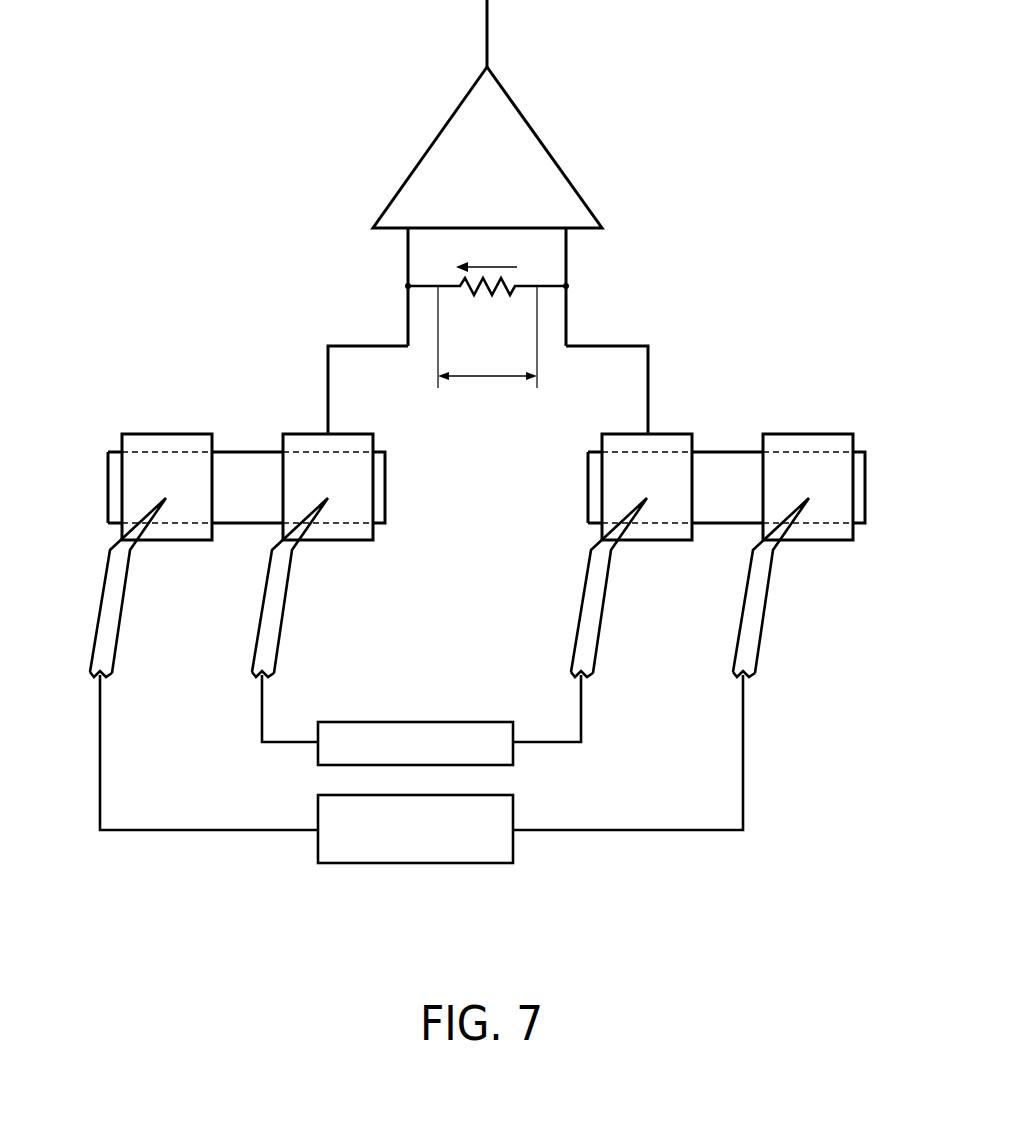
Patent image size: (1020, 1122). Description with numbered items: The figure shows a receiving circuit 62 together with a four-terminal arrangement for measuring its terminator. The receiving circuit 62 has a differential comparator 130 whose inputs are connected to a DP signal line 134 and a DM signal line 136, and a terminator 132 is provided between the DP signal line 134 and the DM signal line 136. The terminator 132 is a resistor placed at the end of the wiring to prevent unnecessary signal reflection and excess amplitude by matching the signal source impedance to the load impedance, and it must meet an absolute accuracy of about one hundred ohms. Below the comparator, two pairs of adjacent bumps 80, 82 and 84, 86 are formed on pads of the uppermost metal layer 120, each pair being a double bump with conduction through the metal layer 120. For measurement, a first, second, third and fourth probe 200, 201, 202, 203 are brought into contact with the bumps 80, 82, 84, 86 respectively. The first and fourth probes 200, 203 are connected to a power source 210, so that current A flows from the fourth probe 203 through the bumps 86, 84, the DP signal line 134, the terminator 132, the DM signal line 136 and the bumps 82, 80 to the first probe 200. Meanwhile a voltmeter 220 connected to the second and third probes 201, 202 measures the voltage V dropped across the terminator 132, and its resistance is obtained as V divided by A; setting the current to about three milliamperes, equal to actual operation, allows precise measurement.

The first receiving circuit 62 is at (598, 108).
The differential comparator 130 is at (523, 112).
The terminator 132 is at (500, 297).
The DP signal line 134 is at (568, 262).
The DM signal line 136 is at (406, 262).
The bump 80 is at (193, 434).
The bump 82 is at (352, 434).
The bump 84 is at (675, 434).
The bump 86 is at (837, 434).
The metal layer 120 is at (250, 452).
The first probe 200 is at (113, 635).
The second probe 201 is at (275, 635).
The third probe 202 is at (594, 635).
The fourth probe 203 is at (756, 635).
The power source 210 is at (497, 779).
The voltmeter 220 is at (497, 706).